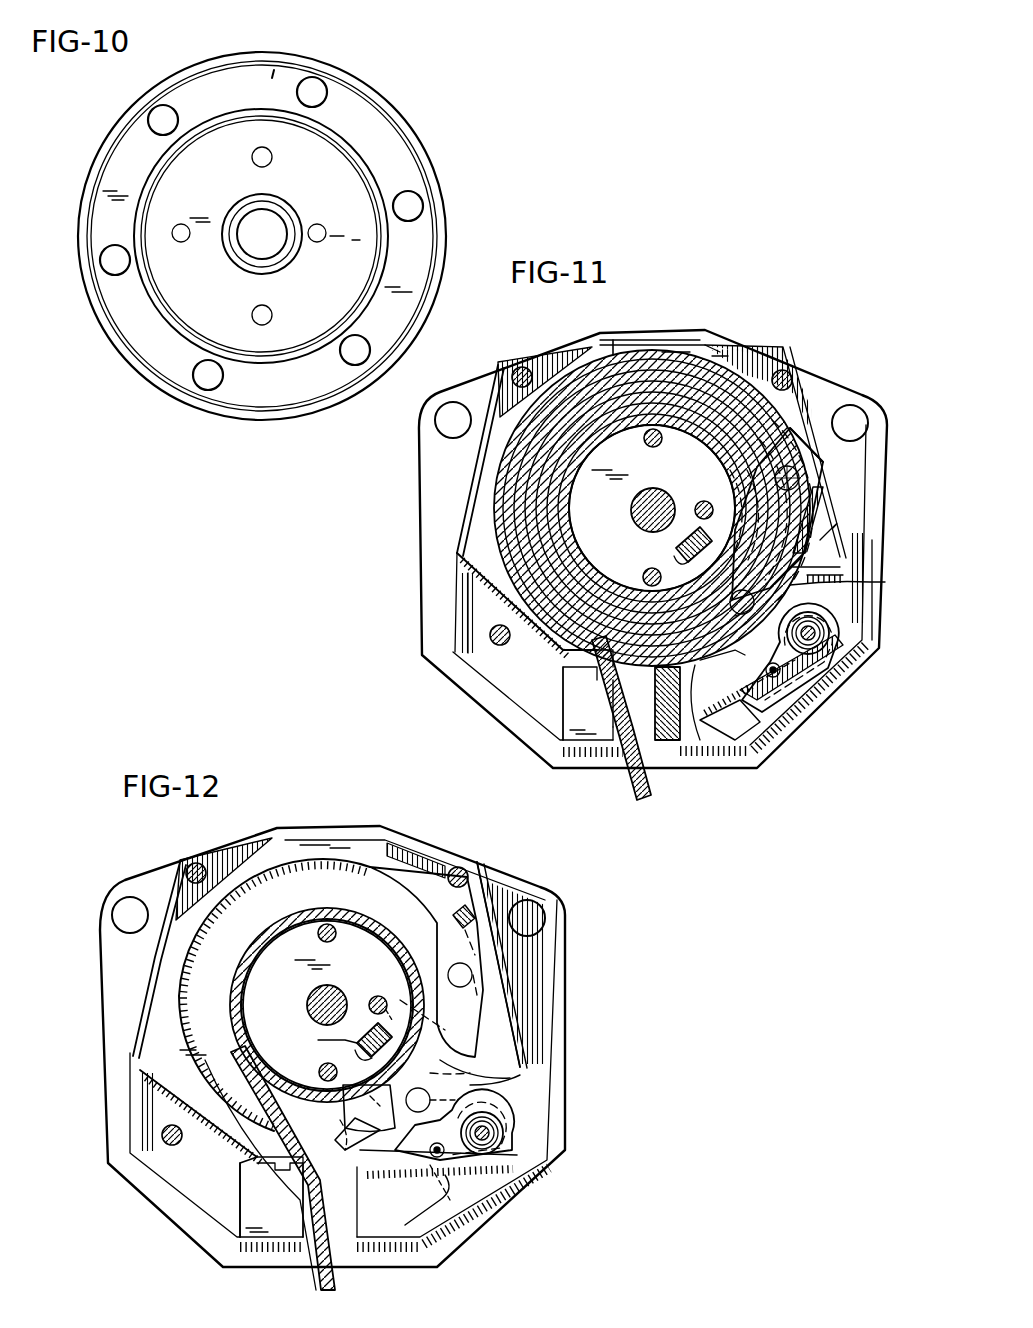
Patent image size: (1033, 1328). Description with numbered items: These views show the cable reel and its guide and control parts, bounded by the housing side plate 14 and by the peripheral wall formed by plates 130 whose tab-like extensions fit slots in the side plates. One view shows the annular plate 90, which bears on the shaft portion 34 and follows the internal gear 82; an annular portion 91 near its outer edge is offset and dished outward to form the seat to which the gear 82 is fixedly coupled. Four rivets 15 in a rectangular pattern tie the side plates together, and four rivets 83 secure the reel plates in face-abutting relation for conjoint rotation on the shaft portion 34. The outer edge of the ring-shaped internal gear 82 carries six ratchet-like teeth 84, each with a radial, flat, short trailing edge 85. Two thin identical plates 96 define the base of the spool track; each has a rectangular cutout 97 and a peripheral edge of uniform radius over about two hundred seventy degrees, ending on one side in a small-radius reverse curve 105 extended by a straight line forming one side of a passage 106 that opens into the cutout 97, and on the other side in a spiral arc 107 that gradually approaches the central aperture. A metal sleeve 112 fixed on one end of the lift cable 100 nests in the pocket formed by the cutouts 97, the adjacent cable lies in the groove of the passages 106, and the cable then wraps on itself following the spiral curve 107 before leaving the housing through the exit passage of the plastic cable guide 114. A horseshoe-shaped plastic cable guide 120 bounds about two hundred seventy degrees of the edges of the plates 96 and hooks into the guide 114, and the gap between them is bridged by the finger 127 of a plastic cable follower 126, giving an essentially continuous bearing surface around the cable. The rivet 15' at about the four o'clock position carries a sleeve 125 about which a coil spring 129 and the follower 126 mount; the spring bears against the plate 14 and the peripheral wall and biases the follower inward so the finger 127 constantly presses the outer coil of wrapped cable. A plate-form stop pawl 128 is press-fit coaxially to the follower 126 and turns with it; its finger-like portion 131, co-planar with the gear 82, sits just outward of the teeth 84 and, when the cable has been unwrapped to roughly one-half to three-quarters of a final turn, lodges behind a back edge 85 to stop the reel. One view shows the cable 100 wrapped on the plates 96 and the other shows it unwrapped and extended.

In FIG. 10, the annular plate 90 is at (212, 60).
In FIG. 10, the annular portion 91 is at (272, 78).
In FIG. 11, the plate 14 is at (838, 384).
In FIG. 12, the plate 14 is at (522, 870).
In FIG. 11, the rivets 15 is at (619, 472).
In FIG. 12, the rivets 15 is at (353, 993).
In FIG. 11, the rivet 15' is at (849, 634).
In FIG. 12, the rivet 15' is at (526, 1120).
In FIG. 11, the shaft portion 34 is at (645, 503).
In FIG. 12, the shaft portion 34 is at (312, 995).
In FIG. 11, the internal gear 82 is at (812, 473).
In FIG. 12, the internal gear 82 is at (478, 955).
In FIG. 11, the rivets 83 is at (646, 445).
In FIG. 12, the rivets 83 is at (330, 924).
In FIG. 11, the teeth 84 is at (849, 583).
In FIG. 12, the teeth 84 is at (500, 1078).
In FIG. 11, the trailing edge 85 is at (830, 530).
In FIG. 12, the trailing edge 85 is at (400, 1148).
In FIG. 11, the plates 96 is at (614, 540).
In FIG. 12, the plates 96 is at (285, 930).
In FIG. 11, the cutout 97 is at (660, 562).
In FIG. 12, the cutout 97 is at (330, 1060).
In FIG. 11, the lift cable 100 is at (613, 345).
In FIG. 12, the lift cable 100 is at (250, 950).
In FIG. 11, the reversely directed curve 105 is at (737, 505).
In FIG. 12, the reversely directed curve 105 is at (476, 998).
In FIG. 12, the passage 106 is at (390, 998).
In FIG. 11, the spiral arc 107 is at (718, 450).
In FIG. 12, the spiral arc 107 is at (430, 945).
In FIG. 11, the metal sleeve 112 is at (676, 545).
In FIG. 12, the metal sleeve 112 is at (339, 1041).
In FIG. 11, the cable guide 114 is at (613, 727).
In FIG. 12, the cable guide 114 is at (275, 1213).
In FIG. 11, the horseshoe shaped cable guide 120 is at (482, 507).
In FIG. 12, the horseshoe shaped cable guide 120 is at (160, 982).
In FIG. 11, the sleeve 125 is at (827, 663).
In FIG. 12, the sleeve 125 is at (505, 1130).
In FIG. 11, the cable follower 126 is at (740, 672).
In FIG. 12, the cable follower 126 is at (350, 1152).
In FIG. 11, the finger 127 is at (693, 680).
In FIG. 12, the finger 127 is at (500, 1066).
In FIG. 11, the stop pawl 128 is at (803, 697).
In FIG. 12, the stop pawl 128 is at (450, 1168).
In FIG. 11, the coil spring 129 is at (800, 722).
In FIG. 12, the coil spring 129 is at (405, 1225).
In FIG. 11, the plates 130 is at (655, 338).
In FIG. 12, the plates 130 is at (340, 828).
In FIG. 11, the finger-like portion 131 is at (743, 742).
In FIG. 12, the finger-like portion 131 is at (376, 1170).